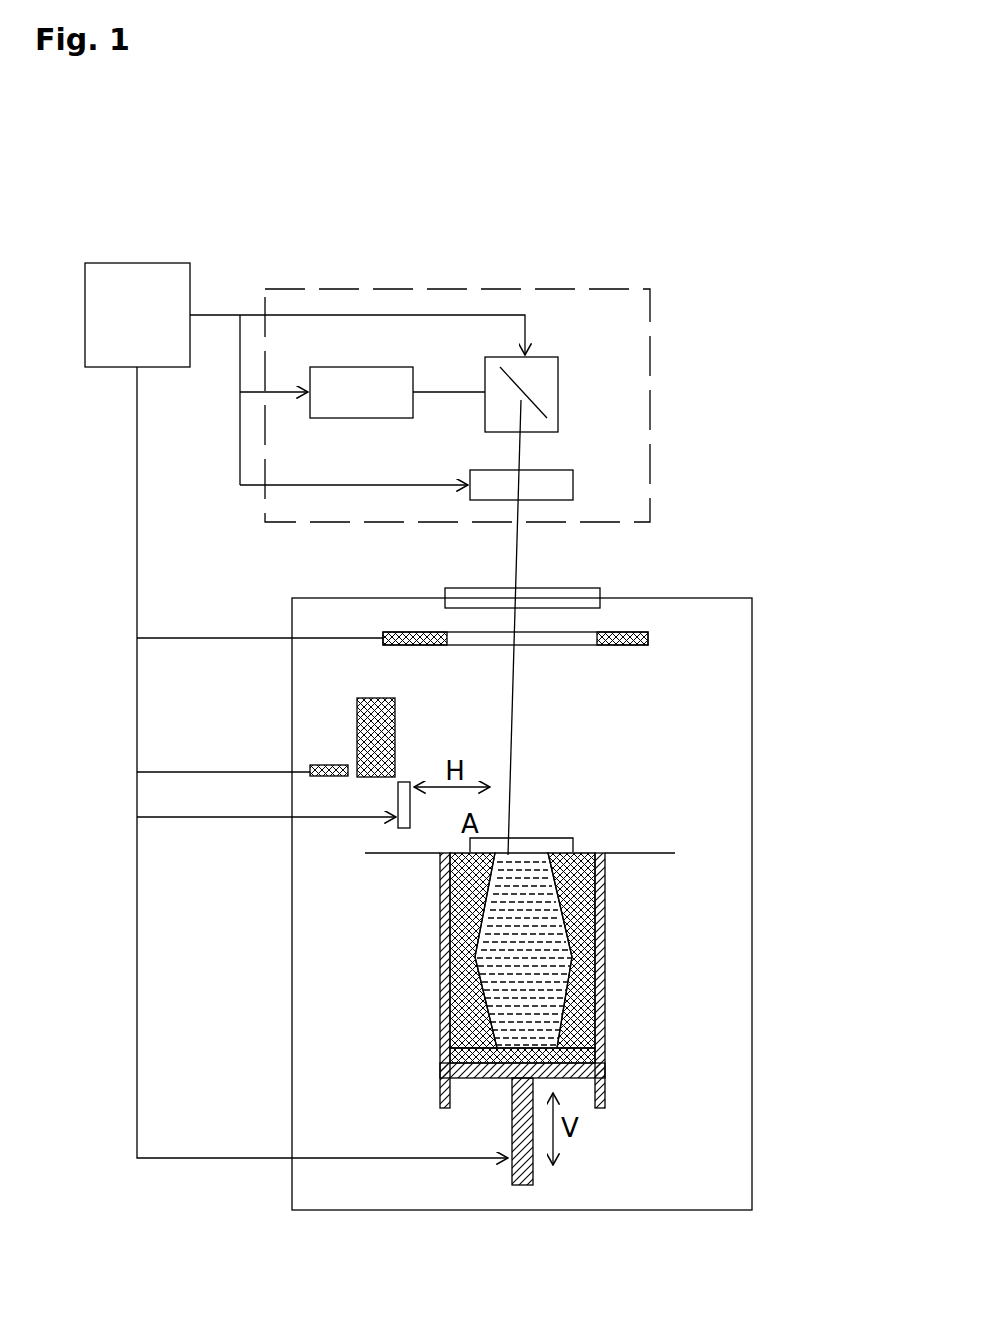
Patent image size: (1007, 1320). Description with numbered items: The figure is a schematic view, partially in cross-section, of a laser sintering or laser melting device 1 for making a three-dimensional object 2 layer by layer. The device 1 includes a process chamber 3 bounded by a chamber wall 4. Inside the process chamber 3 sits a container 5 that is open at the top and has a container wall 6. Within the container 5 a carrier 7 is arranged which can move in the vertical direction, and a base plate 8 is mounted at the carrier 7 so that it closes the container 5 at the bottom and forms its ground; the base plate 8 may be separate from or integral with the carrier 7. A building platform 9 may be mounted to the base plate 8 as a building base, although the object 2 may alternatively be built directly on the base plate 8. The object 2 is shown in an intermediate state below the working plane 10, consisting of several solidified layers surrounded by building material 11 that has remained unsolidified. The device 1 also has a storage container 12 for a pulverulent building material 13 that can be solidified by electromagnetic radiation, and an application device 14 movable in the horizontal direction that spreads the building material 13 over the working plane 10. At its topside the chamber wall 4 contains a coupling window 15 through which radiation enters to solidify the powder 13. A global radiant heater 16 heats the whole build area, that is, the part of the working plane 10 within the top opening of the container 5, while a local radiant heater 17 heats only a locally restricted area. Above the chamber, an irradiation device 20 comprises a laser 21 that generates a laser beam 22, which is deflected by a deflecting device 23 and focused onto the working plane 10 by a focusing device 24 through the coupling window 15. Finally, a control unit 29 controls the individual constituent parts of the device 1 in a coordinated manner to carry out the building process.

The laser sintering or laser melting device 1 is at (797, 181).
The object 2 is at (608, 900).
The process chamber 3 is at (755, 703).
The chamber wall 4 is at (755, 833).
The container 5 is at (607, 1030).
The container wall 6 is at (607, 978).
The carrier 7 is at (505, 1075).
The base plate 8 is at (440, 1078).
The building platform 9 is at (440, 1050).
The working plane 10 is at (582, 850).
The building material 11 is at (440, 892).
The storage container 12 is at (377, 698).
The pulverulent building material 13 is at (396, 740).
The application device 14 is at (398, 786).
The coupling window 15 is at (552, 597).
The global radiant heater 16 is at (622, 646).
The local radiant heater 17 is at (333, 765).
The irradiation device 20 is at (650, 395).
The laser 21 is at (357, 418).
The laser beam 22 is at (428, 392).
The deflecting device 23 is at (548, 366).
The focusing device 24 is at (550, 481).
The control unit 29 is at (305, 710).